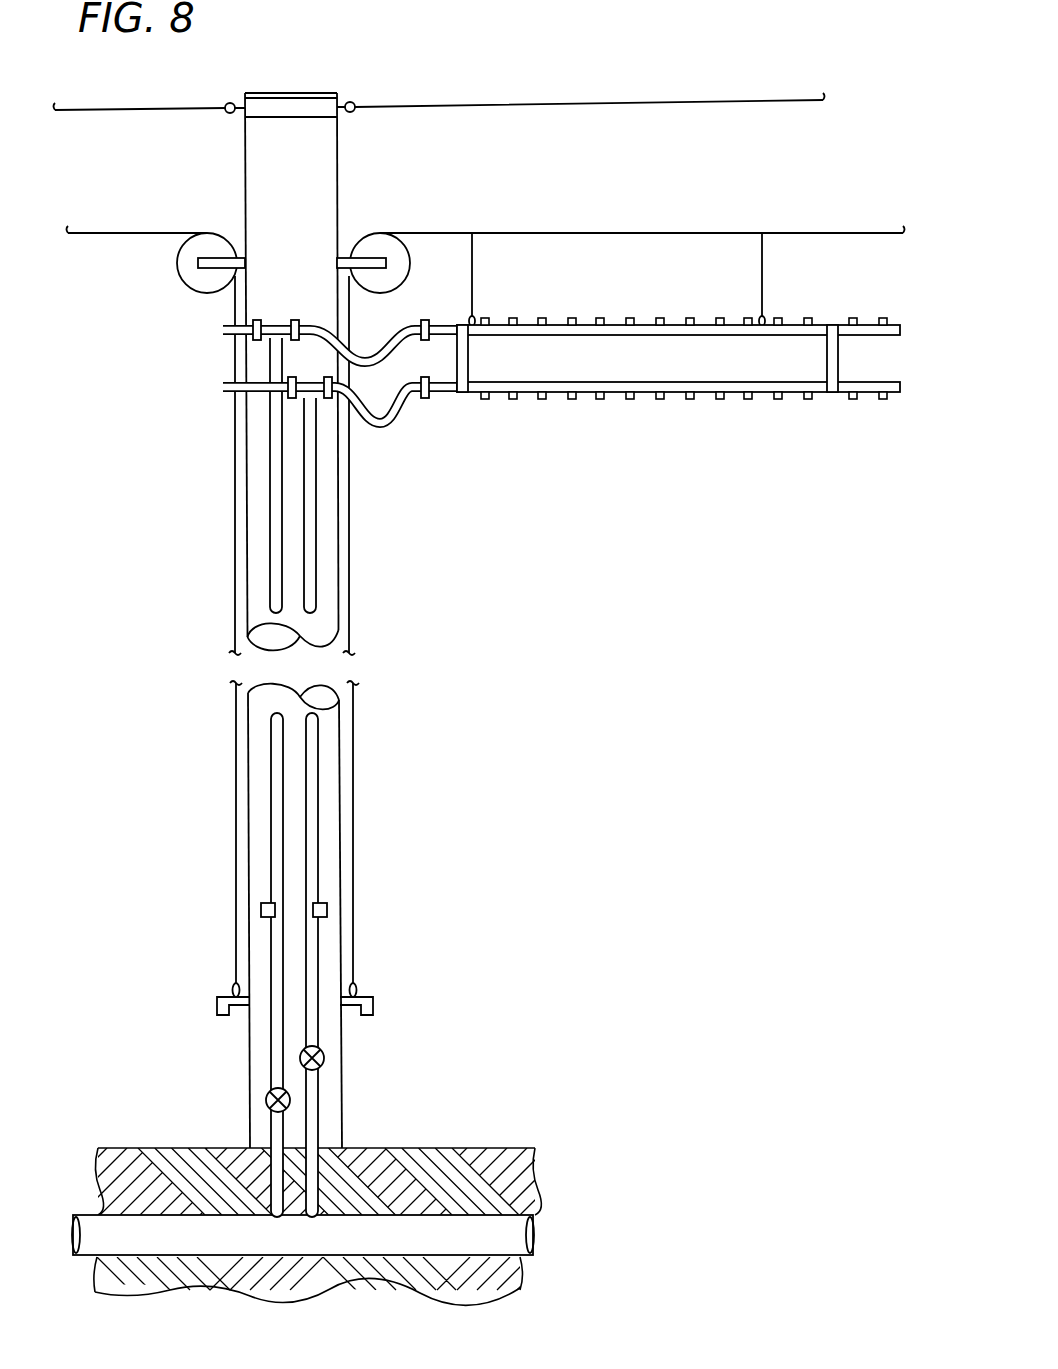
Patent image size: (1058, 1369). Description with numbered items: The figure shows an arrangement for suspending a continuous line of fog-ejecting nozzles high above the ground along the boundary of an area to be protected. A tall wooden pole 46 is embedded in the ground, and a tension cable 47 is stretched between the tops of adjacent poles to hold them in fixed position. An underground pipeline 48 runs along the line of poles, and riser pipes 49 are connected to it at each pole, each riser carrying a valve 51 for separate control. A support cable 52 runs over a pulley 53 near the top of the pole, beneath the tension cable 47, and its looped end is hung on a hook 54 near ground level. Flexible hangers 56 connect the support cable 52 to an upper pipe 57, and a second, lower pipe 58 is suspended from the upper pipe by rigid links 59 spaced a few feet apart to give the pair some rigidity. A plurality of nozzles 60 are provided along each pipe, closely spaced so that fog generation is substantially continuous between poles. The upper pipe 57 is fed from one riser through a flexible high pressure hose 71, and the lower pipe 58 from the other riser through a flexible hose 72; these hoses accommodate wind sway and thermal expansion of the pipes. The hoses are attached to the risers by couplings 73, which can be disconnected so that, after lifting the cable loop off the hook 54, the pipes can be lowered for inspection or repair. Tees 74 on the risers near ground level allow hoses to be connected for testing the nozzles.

The wooden pole 46 is at (245, 163).
The tension cable 47 is at (537, 102).
The underground pipeline 48 is at (535, 1217).
The riser pipes 49 is at (320, 1118).
The valve 51 is at (323, 1060).
The support cable 52 is at (795, 233).
The pulley 53 is at (412, 264).
The hook 54 is at (217, 1002).
The flexible hangers 56 is at (474, 270).
The pipe 57 is at (870, 317).
The second pipe 58 is at (873, 397).
The rigid links 59 is at (843, 358).
The nozzles 60 is at (545, 318).
The flexible high pressure hose 71 is at (395, 326).
The flexible hose 72 is at (397, 425).
The couplings 73 is at (313, 293).
The tees 74 is at (322, 902).